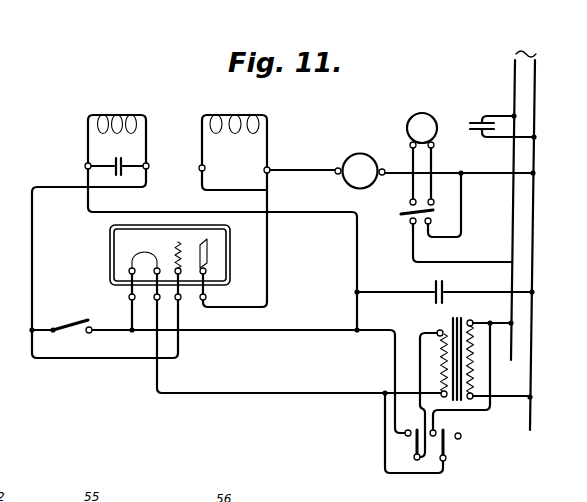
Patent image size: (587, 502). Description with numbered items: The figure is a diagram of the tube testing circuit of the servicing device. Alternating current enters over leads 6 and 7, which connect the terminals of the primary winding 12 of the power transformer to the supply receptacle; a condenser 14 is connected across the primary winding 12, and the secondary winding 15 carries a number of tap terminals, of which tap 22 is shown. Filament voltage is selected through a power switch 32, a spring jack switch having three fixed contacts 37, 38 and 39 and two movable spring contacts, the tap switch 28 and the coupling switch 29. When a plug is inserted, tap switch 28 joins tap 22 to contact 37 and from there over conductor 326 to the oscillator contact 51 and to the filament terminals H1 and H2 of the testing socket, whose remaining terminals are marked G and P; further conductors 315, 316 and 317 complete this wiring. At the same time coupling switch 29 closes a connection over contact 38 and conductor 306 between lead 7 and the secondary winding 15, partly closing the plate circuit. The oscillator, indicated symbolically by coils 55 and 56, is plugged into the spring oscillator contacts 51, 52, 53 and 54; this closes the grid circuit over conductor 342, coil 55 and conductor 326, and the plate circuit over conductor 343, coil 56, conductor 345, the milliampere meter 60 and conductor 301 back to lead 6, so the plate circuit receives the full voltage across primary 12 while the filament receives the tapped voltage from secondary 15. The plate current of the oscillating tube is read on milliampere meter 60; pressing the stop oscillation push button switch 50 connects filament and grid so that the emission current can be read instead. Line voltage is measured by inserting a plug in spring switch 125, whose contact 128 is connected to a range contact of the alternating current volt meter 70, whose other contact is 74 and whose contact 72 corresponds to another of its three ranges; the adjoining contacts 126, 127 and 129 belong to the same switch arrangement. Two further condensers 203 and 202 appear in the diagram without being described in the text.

The oscillator coil 55 is at (118, 112).
The condenser 203 is at (120, 152).
The oscillator contact 51 is at (85, 166).
The oscillator contact 52 is at (149, 164).
The oscillator coil 56 is at (242, 108).
The oscillator contact 53 is at (205, 167).
The oscillator contact 54 is at (270, 168).
The plate circuit conductor 345 is at (300, 174).
The milliampere meter 60 is at (367, 154).
The alternating current volt meter 70 is at (432, 118).
The volt meter contact 74 is at (410, 145).
The volt meter range contact 72 is at (434, 145).
The lead 7 is at (536, 111).
The lead 6 is at (534, 131).
The condenser 14 is at (474, 132).
The conductor 301 is at (484, 176).
The switch contact 126 is at (410, 203).
The switch contact 128 is at (433, 201).
The spring switch 125 is at (408, 216).
The switch contact 127 is at (411, 230).
The switch contact 129 is at (431, 222).
The conductor 326 is at (147, 212).
The conductor 342 is at (33, 256).
The conductor 343 is at (268, 262).
The stop oscillation switch 50 is at (71, 320).
The filament terminal H2 is at (129, 298).
The filament terminal H1 is at (156, 300).
The grid terminal G is at (181, 299).
The plate terminal P is at (206, 297).
The condenser 202 is at (444, 300).
The tap terminal 22 is at (437, 333).
The secondary winding 15 is at (440, 371).
The primary winding 12 is at (473, 370).
The conductor 306 is at (492, 352).
The conductor 317 is at (226, 391).
The conductor 315 is at (396, 412).
The conductor 316 is at (350, 420).
The fixed contact 37 is at (404, 434).
The power switch 32 is at (406, 446).
The tap switch 28 is at (417, 447).
The fixed contact 38 is at (437, 431).
The fixed contact 39 is at (461, 437).
The coupling switch 29 is at (447, 461).